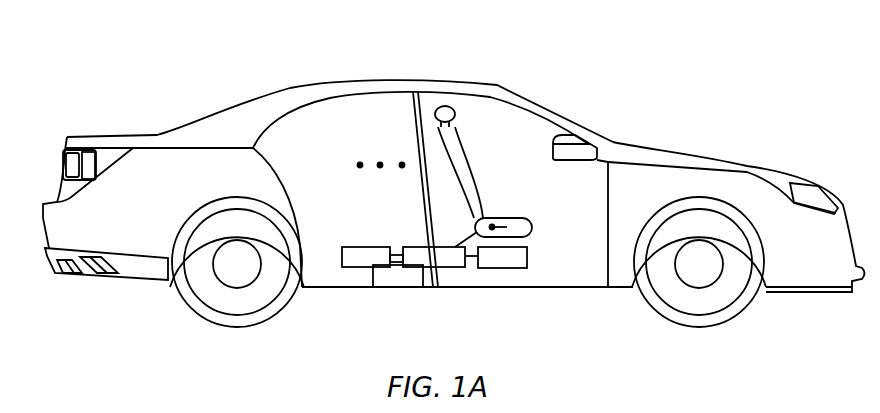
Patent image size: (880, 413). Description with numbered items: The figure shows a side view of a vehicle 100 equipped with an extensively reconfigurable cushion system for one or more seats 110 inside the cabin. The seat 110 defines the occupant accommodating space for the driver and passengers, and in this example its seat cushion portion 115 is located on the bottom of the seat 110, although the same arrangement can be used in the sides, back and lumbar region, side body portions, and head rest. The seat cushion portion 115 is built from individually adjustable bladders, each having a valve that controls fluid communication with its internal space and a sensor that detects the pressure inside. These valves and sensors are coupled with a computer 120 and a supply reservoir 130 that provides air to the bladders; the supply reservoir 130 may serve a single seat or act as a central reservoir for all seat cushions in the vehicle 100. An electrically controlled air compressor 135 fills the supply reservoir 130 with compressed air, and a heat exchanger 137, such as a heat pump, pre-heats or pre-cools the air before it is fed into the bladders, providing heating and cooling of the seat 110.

The vehicle 100 is at (109, 47).
The seat 110 is at (443, 106).
The seat cushion portion 115 is at (507, 218).
The computer 120 is at (502, 268).
The supply reservoir 130 is at (418, 246).
The air compressor 135 is at (377, 246).
The heat exchanger 137 is at (400, 288).